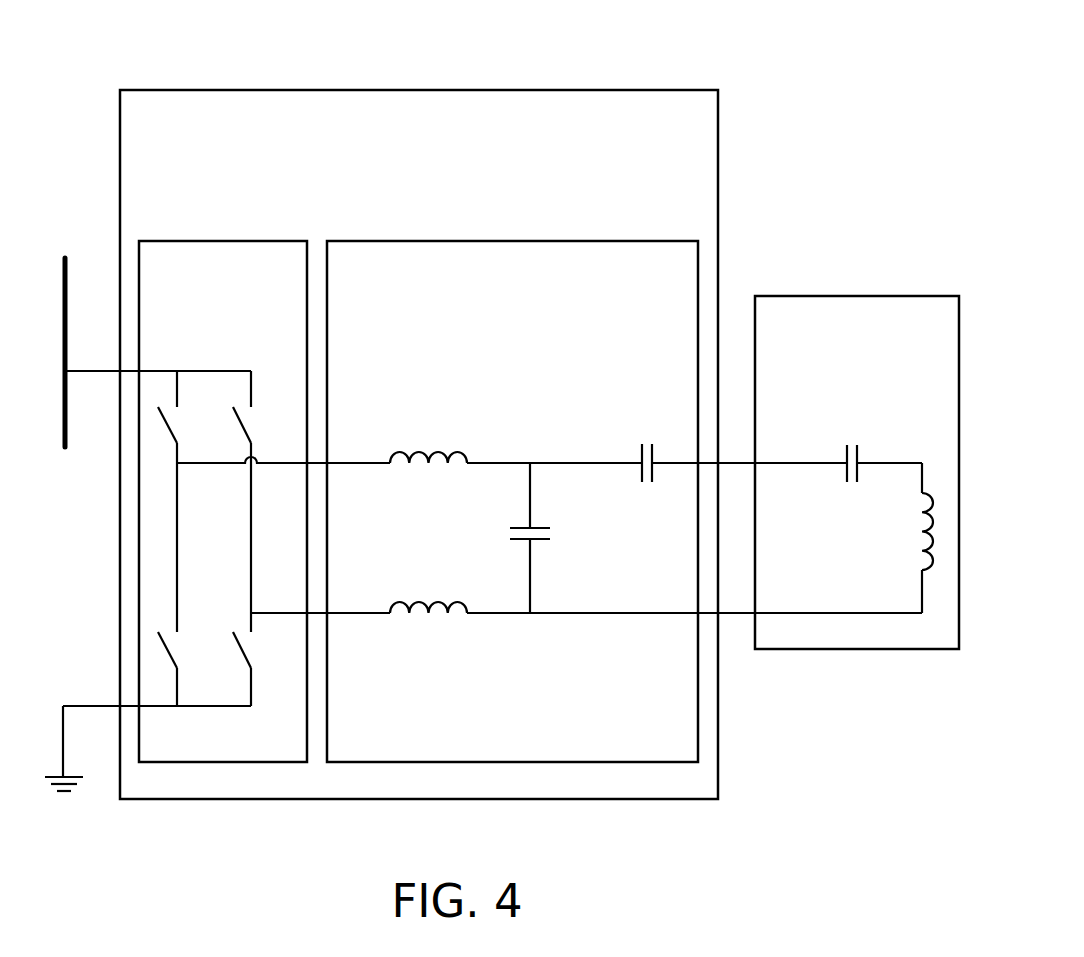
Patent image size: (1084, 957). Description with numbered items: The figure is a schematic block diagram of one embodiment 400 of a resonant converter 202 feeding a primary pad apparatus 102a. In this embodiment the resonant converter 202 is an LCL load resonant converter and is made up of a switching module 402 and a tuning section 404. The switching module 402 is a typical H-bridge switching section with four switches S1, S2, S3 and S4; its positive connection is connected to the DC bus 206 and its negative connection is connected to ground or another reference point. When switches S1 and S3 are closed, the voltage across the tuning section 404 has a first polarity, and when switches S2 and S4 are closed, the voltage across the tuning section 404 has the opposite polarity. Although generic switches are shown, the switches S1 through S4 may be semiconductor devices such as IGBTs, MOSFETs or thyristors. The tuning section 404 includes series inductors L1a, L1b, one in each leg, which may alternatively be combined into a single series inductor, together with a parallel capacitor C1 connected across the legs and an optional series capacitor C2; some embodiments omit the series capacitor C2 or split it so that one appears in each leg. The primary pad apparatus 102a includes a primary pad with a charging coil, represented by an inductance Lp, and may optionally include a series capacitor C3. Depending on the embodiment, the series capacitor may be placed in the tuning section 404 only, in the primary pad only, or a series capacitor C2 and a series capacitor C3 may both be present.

The embodiment of a resonant converter feeding a primary pad apparatus 400 is at (125, 45).
The DC bus 206 is at (67, 265).
The resonant converter 202 is at (409, 444).
The switching module 402 is at (195, 501).
The tuning section 404 is at (541, 501).
The primary pad apparatus 102a is at (857, 472).
The switch S1 is at (185, 501).
The switch S2 is at (185, 669).
The switch S3 is at (260, 669).
The switch S4 is at (260, 501).
The series inductor L1a is at (428, 475).
The series inductor L1b is at (428, 623).
The parallel capacitor C1 is at (546, 538).
The series capacitor C2 is at (642, 478).
The series capacitor C3 is at (847, 478).
The inductance of the charging coil Lp is at (911, 531).